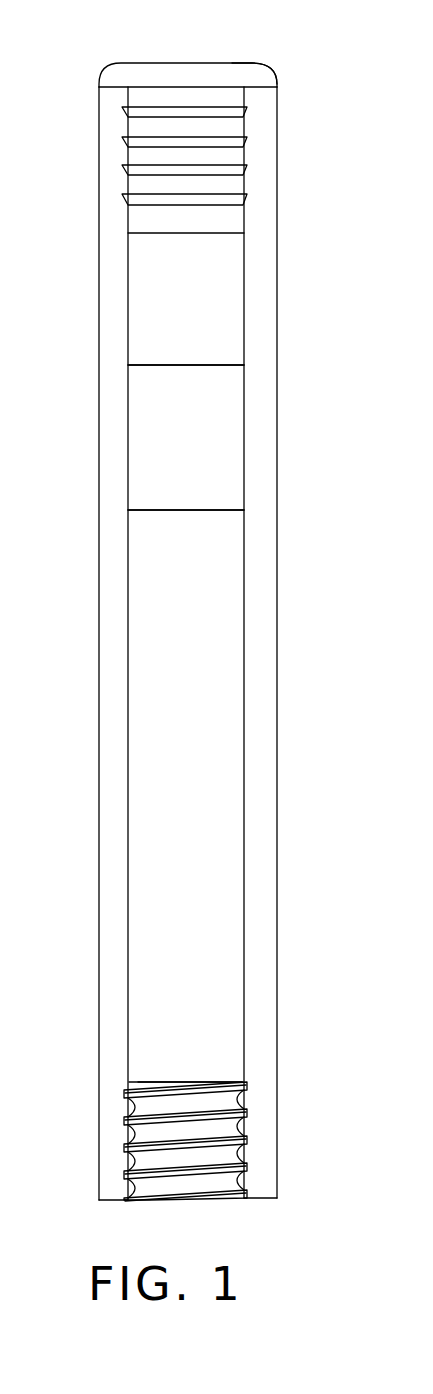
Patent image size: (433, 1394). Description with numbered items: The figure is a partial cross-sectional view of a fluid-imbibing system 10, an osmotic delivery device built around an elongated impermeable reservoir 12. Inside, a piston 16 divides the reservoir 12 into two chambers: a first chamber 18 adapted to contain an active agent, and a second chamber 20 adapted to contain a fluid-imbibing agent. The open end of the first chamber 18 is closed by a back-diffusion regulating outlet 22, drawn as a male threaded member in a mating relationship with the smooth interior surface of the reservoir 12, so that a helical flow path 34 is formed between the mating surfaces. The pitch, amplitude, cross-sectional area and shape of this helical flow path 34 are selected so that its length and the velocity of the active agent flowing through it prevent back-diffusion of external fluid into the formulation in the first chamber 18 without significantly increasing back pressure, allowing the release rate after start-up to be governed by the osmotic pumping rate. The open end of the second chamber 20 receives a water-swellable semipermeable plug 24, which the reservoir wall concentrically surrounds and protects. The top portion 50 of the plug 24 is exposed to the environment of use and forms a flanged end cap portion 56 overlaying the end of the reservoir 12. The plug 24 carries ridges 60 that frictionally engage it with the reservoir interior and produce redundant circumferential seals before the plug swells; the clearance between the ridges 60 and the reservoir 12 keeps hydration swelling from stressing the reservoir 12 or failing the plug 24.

The fluid-imbibing system 10 is at (295, 306).
The impermeable reservoir 12 is at (278, 717).
The piston 16 is at (220, 443).
The first chamber 18 is at (220, 895).
The second chamber 20 is at (227, 243).
The back-diffusion regulating outlet 22 is at (217, 1201).
The water-swellable semipermeable plug 24 is at (187, 107).
The helical flow path 34 is at (128, 1160).
The top portion 50 is at (138, 62).
The flanged end cap portion 56 is at (260, 78).
The ridges 60 is at (244, 108).